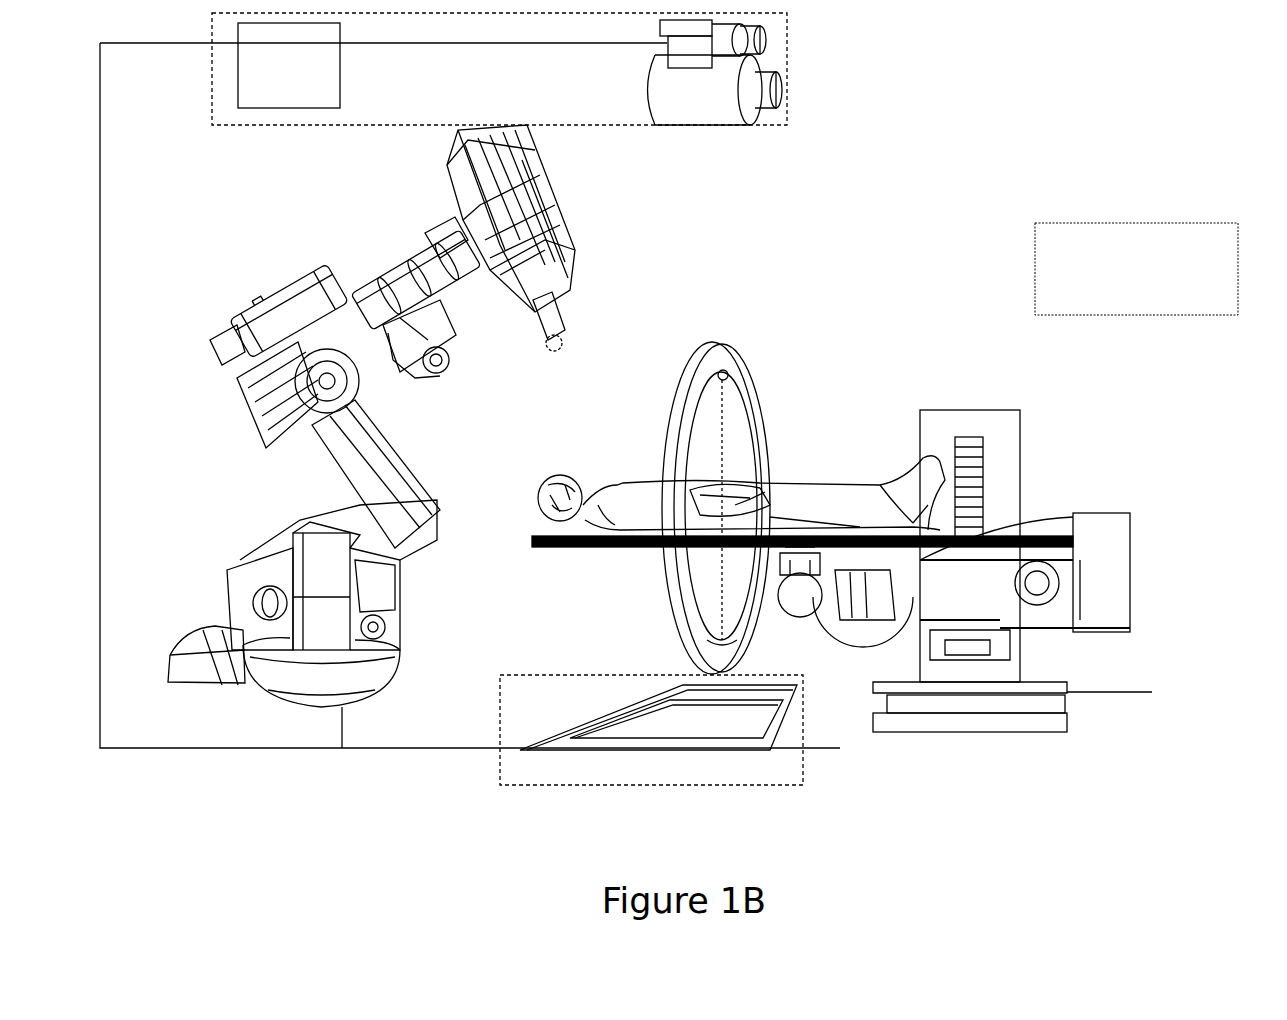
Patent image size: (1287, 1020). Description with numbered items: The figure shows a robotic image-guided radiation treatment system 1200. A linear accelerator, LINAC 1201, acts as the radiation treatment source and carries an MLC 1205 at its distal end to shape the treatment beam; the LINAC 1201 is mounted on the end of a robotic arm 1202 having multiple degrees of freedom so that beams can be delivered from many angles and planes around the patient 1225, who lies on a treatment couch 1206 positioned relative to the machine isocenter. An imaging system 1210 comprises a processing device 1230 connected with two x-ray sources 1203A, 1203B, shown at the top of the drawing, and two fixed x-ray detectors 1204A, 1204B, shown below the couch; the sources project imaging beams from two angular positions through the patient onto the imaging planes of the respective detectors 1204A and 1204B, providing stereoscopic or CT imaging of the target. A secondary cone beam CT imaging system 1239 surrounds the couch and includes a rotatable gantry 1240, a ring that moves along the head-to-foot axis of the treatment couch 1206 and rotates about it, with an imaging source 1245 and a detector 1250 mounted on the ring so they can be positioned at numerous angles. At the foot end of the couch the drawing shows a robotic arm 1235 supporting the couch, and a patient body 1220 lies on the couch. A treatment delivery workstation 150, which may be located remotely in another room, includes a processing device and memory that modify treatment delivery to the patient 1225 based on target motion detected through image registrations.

The radiation treatment system 1200 is at (1062, 141).
The processing device 1230 is at (289, 65).
The imaging system 1210 is at (588, 433).
The x-ray source 1203A is at (732, 132).
The x-ray source 1203B is at (786, 80).
The x-ray detector 1204A is at (800, 696).
The x-ray detector 1204B is at (690, 748).
The treatment delivery workstation 150 is at (1136, 269).
The robotic arm 1202 is at (258, 282).
The linear accelerator (LINAC) 1201 is at (580, 216).
The MLC 1205 is at (570, 342).
The secondary imaging system 1239 is at (759, 496).
The rotatable gantry 1240 is at (676, 390).
The imaging source 1245 is at (728, 374).
The detector 1250 is at (740, 642).
The patient 1220 is at (713, 481).
The patient 1225 is at (548, 488).
The treatment couch 1206 is at (522, 544).
The robotic arm for treatment couch 1235 is at (1068, 506).